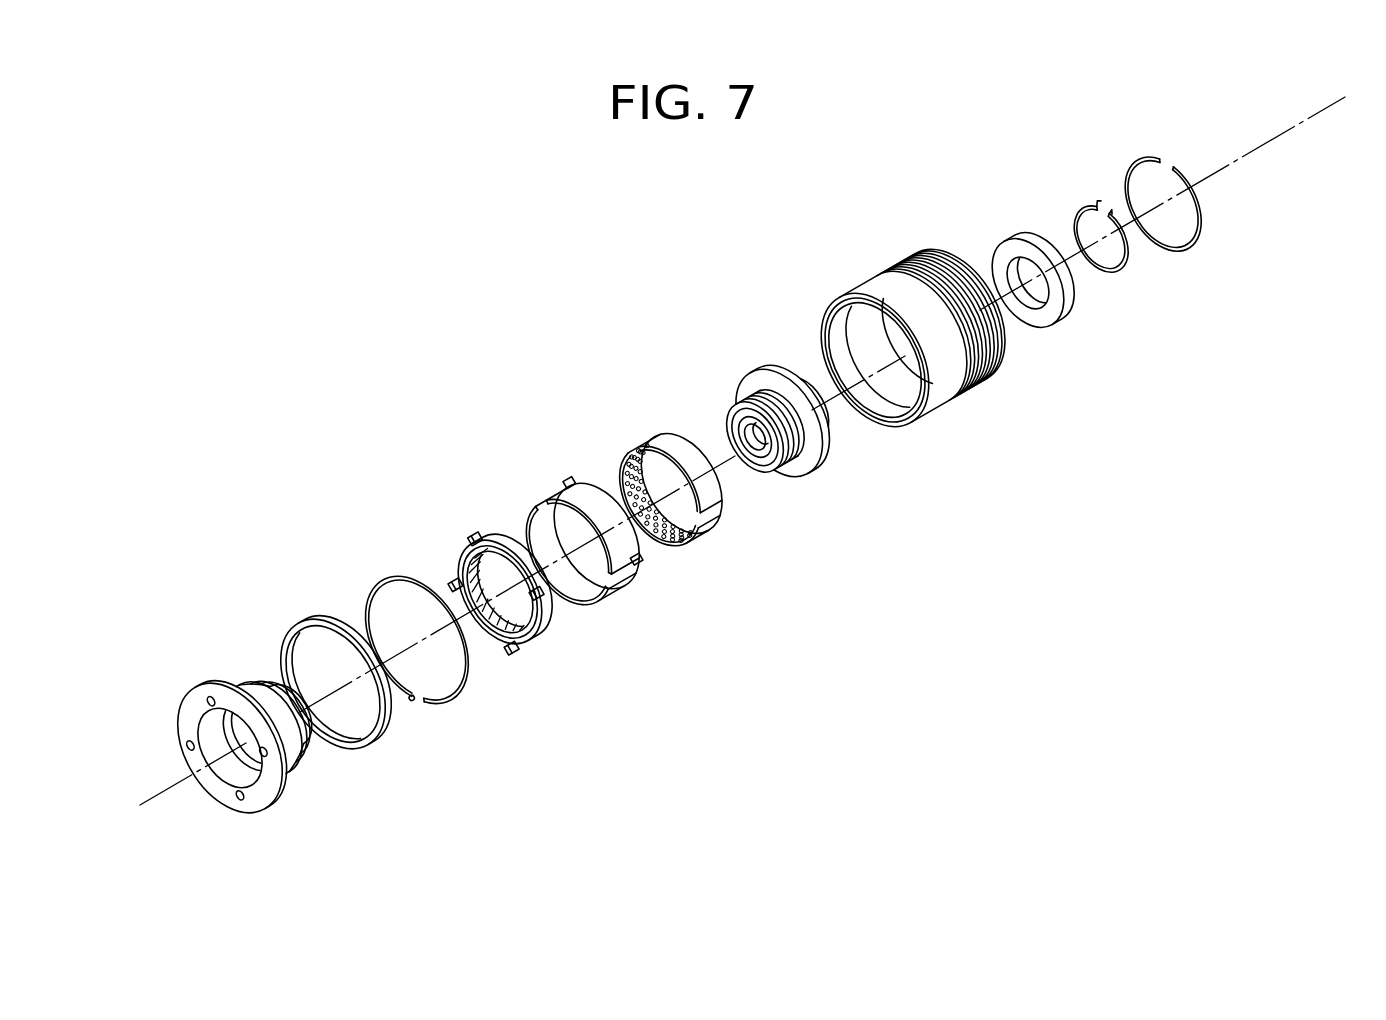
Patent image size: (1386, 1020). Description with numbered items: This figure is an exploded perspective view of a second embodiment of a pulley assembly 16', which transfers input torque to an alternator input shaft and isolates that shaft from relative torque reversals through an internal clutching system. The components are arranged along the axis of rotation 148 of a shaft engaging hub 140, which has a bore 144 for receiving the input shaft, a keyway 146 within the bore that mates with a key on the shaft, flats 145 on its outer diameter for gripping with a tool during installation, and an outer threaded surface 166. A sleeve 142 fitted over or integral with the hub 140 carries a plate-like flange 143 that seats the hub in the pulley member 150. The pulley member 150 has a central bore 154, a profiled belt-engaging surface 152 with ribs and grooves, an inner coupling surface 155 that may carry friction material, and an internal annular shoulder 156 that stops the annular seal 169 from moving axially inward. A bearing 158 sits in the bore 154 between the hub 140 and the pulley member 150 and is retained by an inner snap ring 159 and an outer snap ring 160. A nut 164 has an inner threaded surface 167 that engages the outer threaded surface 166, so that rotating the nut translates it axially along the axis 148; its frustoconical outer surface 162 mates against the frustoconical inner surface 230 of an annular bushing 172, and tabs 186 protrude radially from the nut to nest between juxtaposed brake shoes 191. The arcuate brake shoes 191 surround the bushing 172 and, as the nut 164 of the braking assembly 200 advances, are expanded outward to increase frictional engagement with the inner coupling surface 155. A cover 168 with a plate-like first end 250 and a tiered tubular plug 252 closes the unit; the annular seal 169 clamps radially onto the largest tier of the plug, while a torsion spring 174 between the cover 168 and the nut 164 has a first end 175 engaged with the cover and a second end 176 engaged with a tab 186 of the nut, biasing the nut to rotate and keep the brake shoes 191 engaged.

The pulley assembly 16' is at (651, 243).
The shaft engaging hub 140 is at (772, 432).
The sleeve 142 is at (783, 420).
The flange 143 is at (786, 418).
The bore 144 is at (755, 437).
The flats 145 is at (827, 425).
The keyway 146 is at (755, 437).
The axis of rotation 148 is at (1213, 175).
The pulley member 150 is at (913, 344).
The belt-engaging surface 152 is at (967, 398).
The bore 154 is at (875, 360).
The inner coupling surface 155 is at (883, 356).
The internal annular shoulder 156 is at (875, 359).
The bearing 158 is at (1068, 308).
The inner snap ring 159 is at (1123, 272).
The outer snap ring 160 is at (1198, 237).
The frustoconical outer surface 162 is at (505, 589).
The nut 164 is at (490, 591).
The outer threaded surface 166 is at (776, 425).
The inner threaded surface 167 is at (493, 594).
The cover 168 is at (248, 737).
The annular seal 169 is at (340, 752).
The annular bushing 172 is at (686, 527).
The spring 174 is at (422, 669).
The first end 175 is at (411, 697).
The second end 176 is at (416, 640).
The tabs 186 is at (497, 591).
The brake shoes 191 is at (587, 495).
The braking assembly 200 is at (617, 362).
The frustoconical inner surface 230 is at (660, 546).
The first end 250 is at (232, 746).
The plug 252 is at (285, 787).